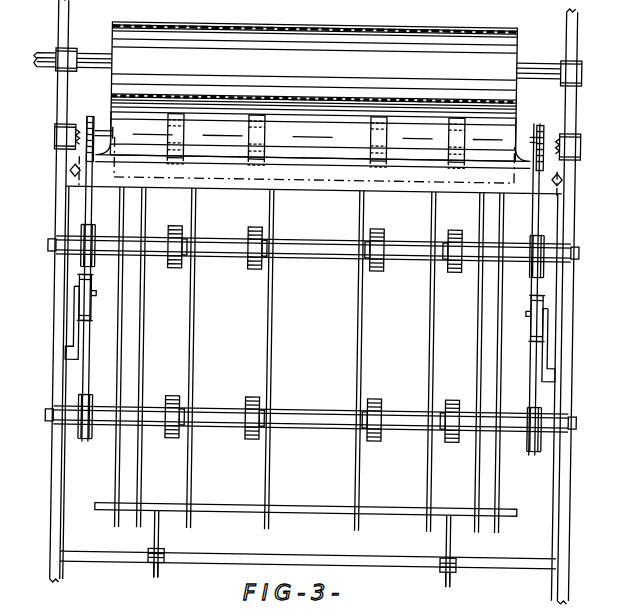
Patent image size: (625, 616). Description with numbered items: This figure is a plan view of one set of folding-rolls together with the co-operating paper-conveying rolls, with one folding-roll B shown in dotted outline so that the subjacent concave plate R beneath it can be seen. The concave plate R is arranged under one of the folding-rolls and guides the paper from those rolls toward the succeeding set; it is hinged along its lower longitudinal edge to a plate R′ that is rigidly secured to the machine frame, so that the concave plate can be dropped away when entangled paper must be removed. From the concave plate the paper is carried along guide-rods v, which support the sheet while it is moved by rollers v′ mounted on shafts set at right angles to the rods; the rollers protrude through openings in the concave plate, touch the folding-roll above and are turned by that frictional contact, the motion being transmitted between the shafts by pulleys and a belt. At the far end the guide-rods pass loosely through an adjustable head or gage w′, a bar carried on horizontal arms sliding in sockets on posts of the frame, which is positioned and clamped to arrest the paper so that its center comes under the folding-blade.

The beam B is at (303, 302).
The concave plate R is at (313, 140).
The plate R′ is at (316, 166).
The guide-rods v is at (309, 360).
The rollers v′ is at (314, 288).
The adjustable head or gage w′ is at (306, 501).